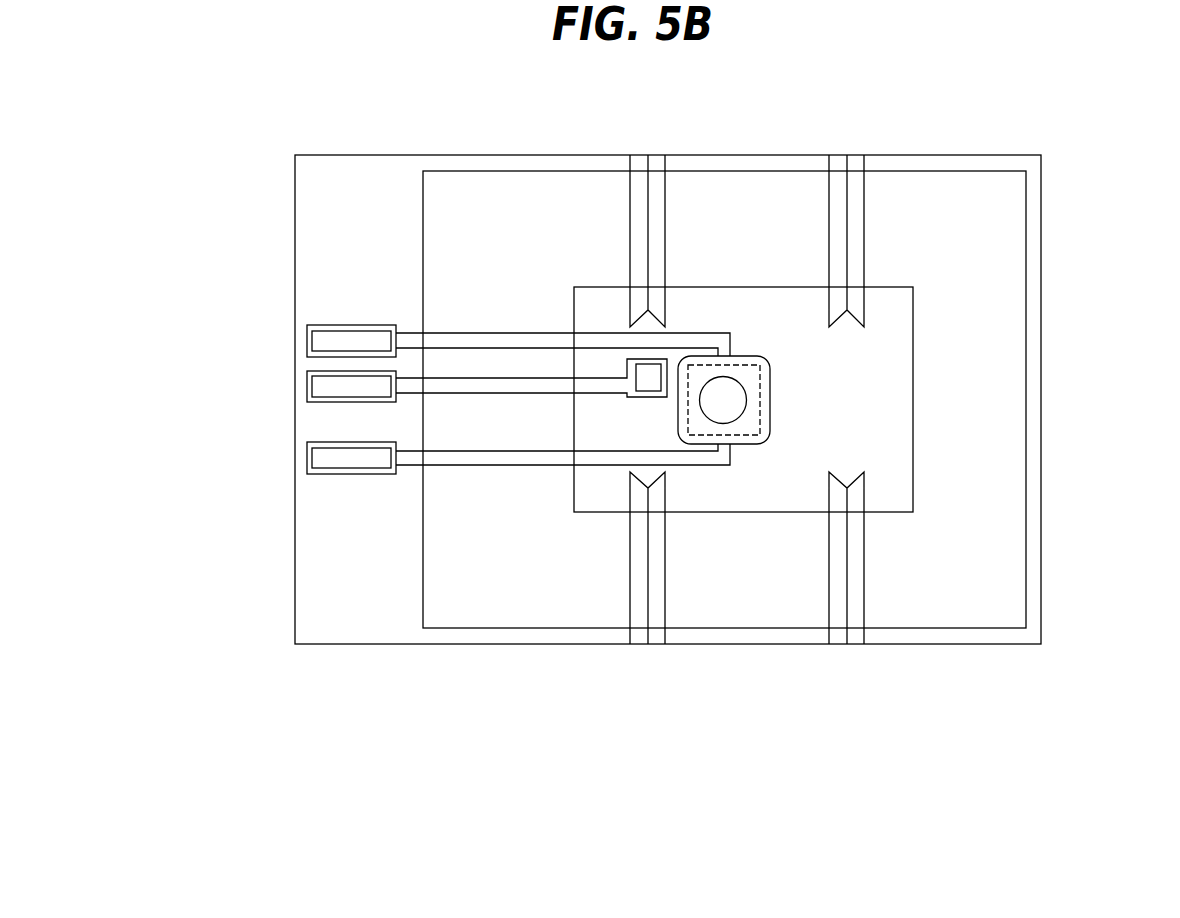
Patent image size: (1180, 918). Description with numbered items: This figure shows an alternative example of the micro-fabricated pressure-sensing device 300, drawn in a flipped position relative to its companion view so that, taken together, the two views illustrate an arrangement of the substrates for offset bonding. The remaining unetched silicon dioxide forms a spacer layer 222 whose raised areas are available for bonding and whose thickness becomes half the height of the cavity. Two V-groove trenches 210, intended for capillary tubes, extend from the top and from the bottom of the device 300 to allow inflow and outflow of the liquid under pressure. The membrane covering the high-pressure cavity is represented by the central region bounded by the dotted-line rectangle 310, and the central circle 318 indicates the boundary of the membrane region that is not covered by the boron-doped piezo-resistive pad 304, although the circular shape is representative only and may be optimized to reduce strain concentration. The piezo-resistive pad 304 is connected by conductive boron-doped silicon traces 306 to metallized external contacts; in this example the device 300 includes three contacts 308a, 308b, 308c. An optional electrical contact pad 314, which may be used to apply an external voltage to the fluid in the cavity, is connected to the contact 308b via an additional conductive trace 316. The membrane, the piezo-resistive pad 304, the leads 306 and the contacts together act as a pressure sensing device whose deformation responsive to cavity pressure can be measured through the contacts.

The device 300 is at (257, 233).
The trenches 210 is at (818, 206).
The spacer layer 222 is at (972, 546).
The piezo-resistive pad 304 is at (750, 358).
The conductive traces 306 is at (480, 470).
The contact 308a is at (330, 338).
The contact 308b is at (350, 383).
The contact 308c is at (340, 458).
The dotted-line rectangle 310 is at (763, 410).
The electrical contact pad 314 is at (648, 388).
The additional conductive trace 316 is at (493, 388).
The central circle 318 is at (748, 396).